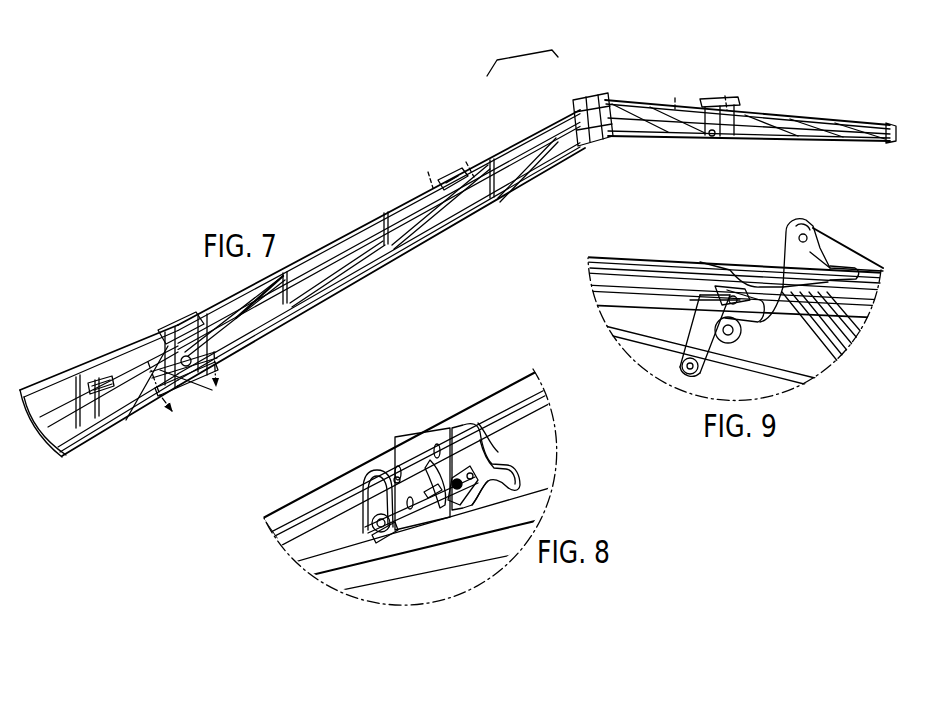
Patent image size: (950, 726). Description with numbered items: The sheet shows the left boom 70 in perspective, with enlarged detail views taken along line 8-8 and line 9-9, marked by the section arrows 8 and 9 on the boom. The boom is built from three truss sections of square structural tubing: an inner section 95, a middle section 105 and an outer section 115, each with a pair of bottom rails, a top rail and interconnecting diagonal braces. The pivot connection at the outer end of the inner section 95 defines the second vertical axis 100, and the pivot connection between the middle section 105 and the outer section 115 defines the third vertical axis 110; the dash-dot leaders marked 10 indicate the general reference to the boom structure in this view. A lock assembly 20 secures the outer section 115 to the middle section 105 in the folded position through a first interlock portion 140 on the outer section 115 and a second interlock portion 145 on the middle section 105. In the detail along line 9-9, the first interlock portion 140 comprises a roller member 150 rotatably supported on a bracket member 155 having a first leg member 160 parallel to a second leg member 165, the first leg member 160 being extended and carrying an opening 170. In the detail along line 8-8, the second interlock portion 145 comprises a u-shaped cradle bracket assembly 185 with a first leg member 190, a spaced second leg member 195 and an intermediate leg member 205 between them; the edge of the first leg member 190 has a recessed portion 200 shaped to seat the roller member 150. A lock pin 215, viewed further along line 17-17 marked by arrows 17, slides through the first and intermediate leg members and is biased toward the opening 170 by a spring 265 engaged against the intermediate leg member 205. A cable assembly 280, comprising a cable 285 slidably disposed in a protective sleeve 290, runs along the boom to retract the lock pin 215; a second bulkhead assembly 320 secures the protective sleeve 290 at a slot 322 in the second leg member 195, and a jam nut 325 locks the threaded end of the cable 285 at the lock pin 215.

In FIG. 7, the lock assembly 20 is at (519, 56).
In FIG. 7, the left boom 70 is at (372, 118).
In FIG. 7, the middle section 105 is at (443, 244).
In FIG. 8, the middle section 105 is at (288, 493).
In FIG. 7, the cable assembly 280 is at (375, 230).
In FIG. 8, the cable assembly 280 is at (309, 553).
In FIG. 7, the inner section 95 is at (45, 364).
In FIG. 7, the second vertical axis 100 is at (169, 311).
In FIG. 7, the section line 10 is at (192, 393).
In FIG. 7, the second interlock portion 145 is at (446, 164).
In FIG. 8, the second interlock portion 145 is at (491, 364).
In FIG. 9, the second interlock portion 145 is at (791, 253).
In FIG. 7, the line 8- 8 is at (427, 163).
In FIG. 7, the third vertical axis 110 is at (593, 95).
In FIG. 7, the outer section 115 is at (810, 96).
In FIG. 9, the outer section 115 is at (609, 250).
In FIG. 7, the first interlock portion 140 is at (703, 96).
In FIG. 9, the first interlock portion 140 is at (665, 314).
In FIG. 7, the line 9- 9 is at (683, 82).
In FIG. 8, the intermediate leg member 205 is at (446, 428).
In FIG. 8, the cradle bracket assembly 185 is at (463, 421).
In FIG. 8, the jam nut 325 is at (395, 478).
In FIG. 8, the second leg member 195 is at (376, 470).
In FIG. 8, the second bulkhead assembly 320 is at (373, 548).
In FIG. 8, the slot 322 is at (403, 535).
In FIG. 8, the protective sleeve 290 is at (328, 566).
In FIG. 8, the cable 285 is at (424, 505).
In FIG. 8, the spring 265 is at (457, 512).
In FIG. 8, the lock pin 215 is at (486, 560).
In FIG. 8, the first leg member 190 is at (481, 490).
In FIG. 8, the recessed portion 200 is at (520, 448).
In FIG. 8, the line 17- 17 is at (419, 489).
In FIG. 9, the roller member 150 is at (707, 350).
In FIG. 9, the opening 170 is at (678, 370).
In FIG. 9, the second leg member 165 is at (743, 334).
In FIG. 9, the first leg member 160 is at (693, 286).
In FIG. 9, the bracket member 155 is at (686, 311).